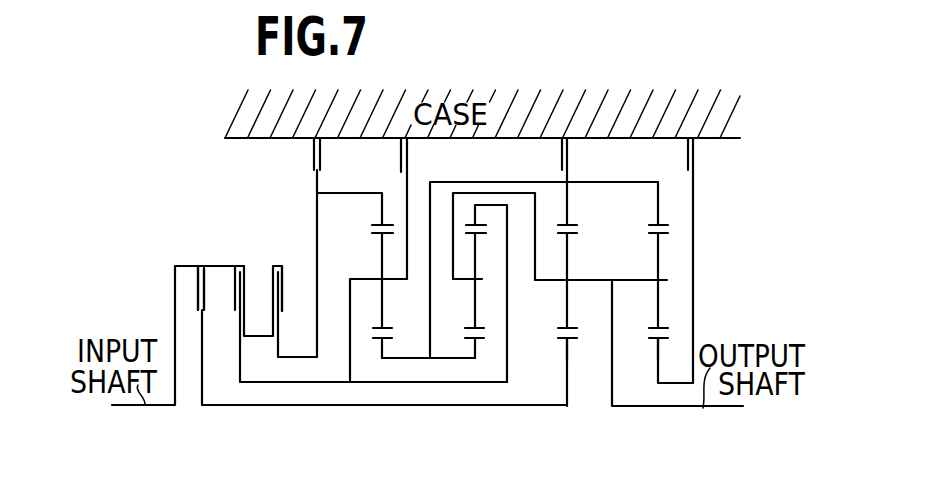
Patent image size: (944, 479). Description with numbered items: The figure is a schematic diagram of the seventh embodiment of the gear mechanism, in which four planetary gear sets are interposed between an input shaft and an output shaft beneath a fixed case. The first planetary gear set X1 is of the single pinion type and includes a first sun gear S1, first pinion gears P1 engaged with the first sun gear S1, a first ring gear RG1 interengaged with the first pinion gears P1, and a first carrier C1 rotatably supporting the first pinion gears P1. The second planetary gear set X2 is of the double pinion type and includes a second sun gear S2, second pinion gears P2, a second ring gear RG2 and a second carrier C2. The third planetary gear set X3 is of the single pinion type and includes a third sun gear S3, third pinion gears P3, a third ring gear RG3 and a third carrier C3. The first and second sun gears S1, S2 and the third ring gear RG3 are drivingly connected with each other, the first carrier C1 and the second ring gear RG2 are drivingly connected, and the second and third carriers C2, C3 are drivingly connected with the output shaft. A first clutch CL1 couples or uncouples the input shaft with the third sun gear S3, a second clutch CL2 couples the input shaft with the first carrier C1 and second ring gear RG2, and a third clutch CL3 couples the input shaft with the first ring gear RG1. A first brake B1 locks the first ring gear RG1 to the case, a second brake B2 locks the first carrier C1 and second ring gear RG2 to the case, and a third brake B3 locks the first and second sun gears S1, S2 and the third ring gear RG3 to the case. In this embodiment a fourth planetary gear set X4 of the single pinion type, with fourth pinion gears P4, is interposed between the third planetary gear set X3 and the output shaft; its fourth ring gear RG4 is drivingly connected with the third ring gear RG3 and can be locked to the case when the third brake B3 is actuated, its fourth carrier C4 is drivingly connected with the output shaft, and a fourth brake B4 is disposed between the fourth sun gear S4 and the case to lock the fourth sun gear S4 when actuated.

The first brake B1 is at (298, 157).
The second brake B2 is at (420, 208).
The third brake B3 is at (584, 181).
The fourth brake B4 is at (709, 260).
The first ring gear RG1 is at (380, 219).
The second ring gear RG2 is at (474, 222).
The third ring gear RG3 is at (567, 213).
The fourth ring gear RG4 is at (658, 214).
The first clutch CL1 is at (200, 271).
The second clutch CL2 is at (241, 265).
The third clutch CL3 is at (291, 295).
The first carrier C1 is at (371, 279).
The second carrier C2 is at (471, 279).
The third carrier C3 is at (552, 280).
The fourth carrier C4 is at (667, 280).
The first pinion gears P1 is at (383, 313).
The second pinion gears P2 is at (476, 313).
The third pinion gears P3 is at (567, 297).
The fourth pinion gears P4 is at (658, 316).
The first sun gear S1 is at (385, 348).
The second sun gear S2 is at (480, 348).
The third sun gear S3 is at (568, 356).
The fourth sun gear S4 is at (660, 356).
The first planetary gear set X1 is at (375, 357).
The second planetary gear set X2 is at (476, 353).
The third planetary gear set X3 is at (562, 353).
The fourth planetary gear set X4 is at (654, 353).